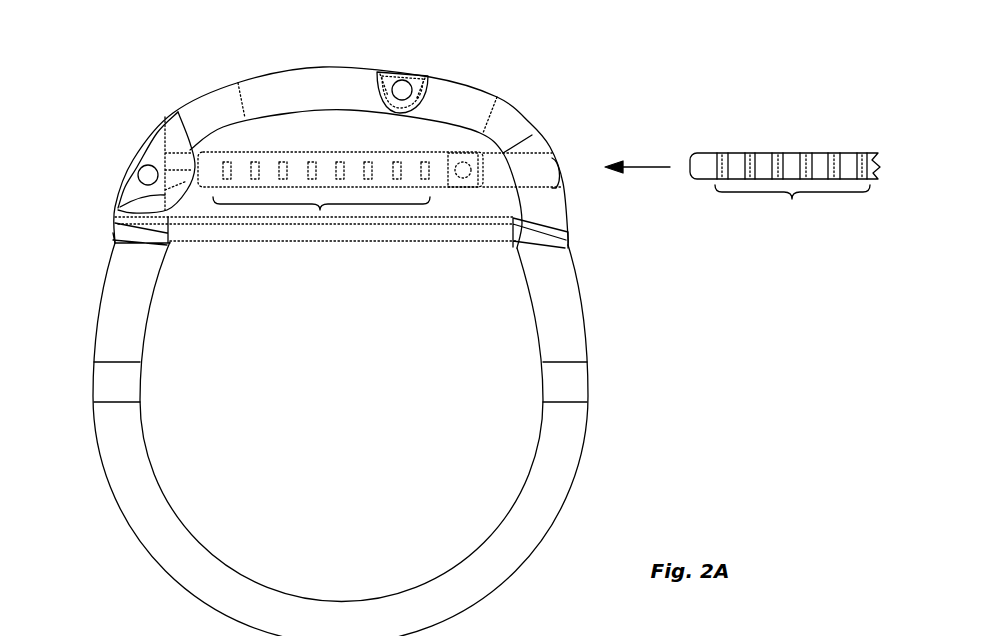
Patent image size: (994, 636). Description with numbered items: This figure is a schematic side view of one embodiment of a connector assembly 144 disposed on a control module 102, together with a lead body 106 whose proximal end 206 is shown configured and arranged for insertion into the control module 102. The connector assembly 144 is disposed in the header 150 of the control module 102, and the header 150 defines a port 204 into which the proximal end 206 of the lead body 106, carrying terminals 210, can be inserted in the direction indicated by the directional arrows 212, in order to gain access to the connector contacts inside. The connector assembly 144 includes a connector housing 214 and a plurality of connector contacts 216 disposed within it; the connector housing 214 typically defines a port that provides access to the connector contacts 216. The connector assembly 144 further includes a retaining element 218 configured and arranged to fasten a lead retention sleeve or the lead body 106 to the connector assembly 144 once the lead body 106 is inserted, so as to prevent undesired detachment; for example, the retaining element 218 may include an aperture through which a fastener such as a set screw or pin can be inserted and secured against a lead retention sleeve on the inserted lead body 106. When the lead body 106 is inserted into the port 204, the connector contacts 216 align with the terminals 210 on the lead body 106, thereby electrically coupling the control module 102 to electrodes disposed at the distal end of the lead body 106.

The control module 102 is at (147, 100).
The header 150 is at (314, 72).
The connector housing 214 is at (237, 151).
The connector assembly 144 is at (434, 151).
The port 204 is at (570, 152).
The connector contacts 216 is at (318, 209).
The retaining element 218 is at (459, 185).
The proximal end 206 is at (764, 127).
The lead body 106 is at (812, 153).
The terminals 210 is at (792, 208).
The directional arrows 212 is at (640, 167).